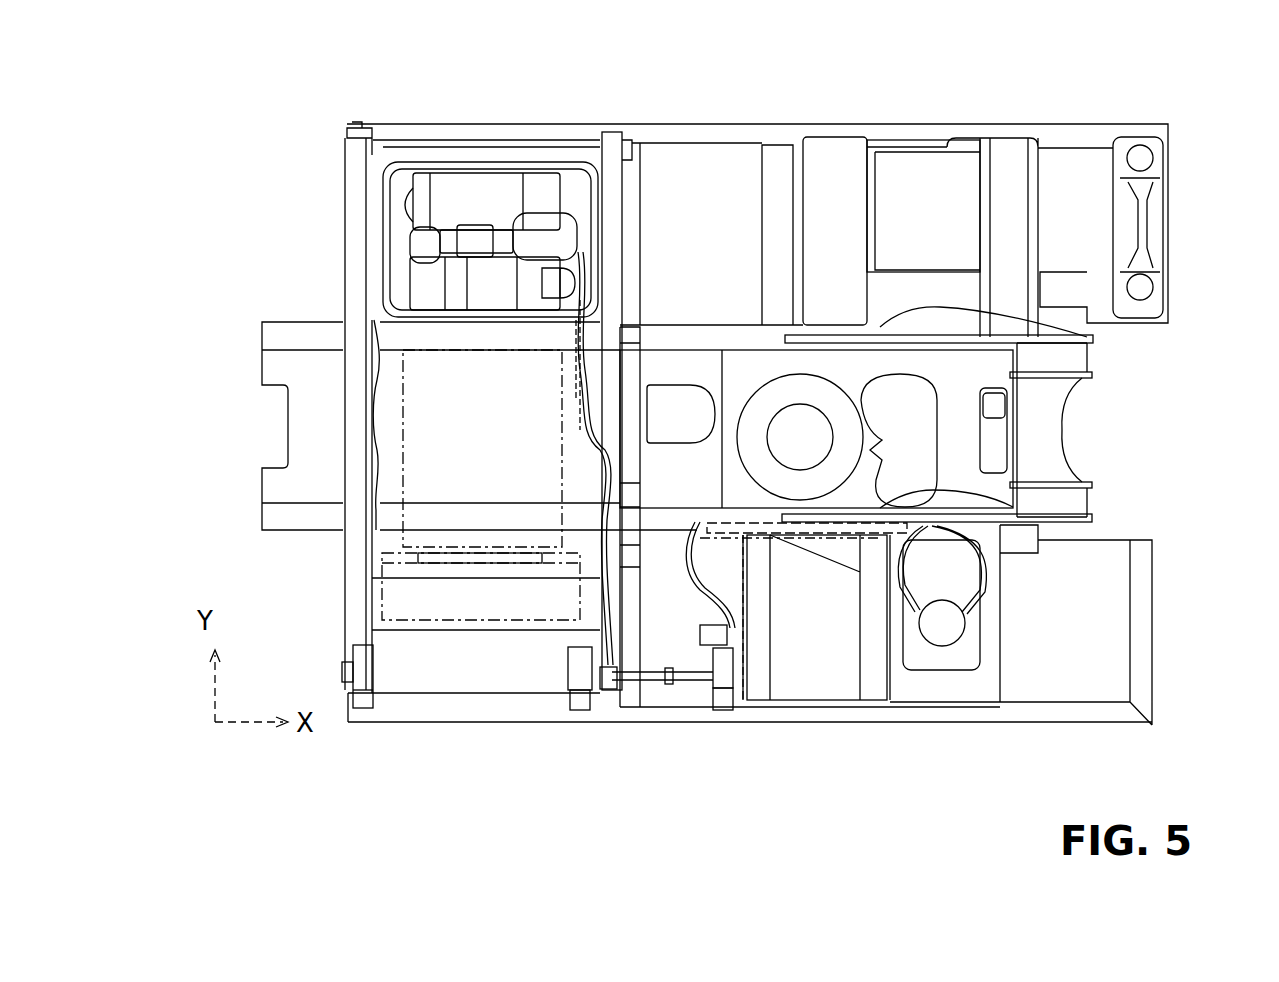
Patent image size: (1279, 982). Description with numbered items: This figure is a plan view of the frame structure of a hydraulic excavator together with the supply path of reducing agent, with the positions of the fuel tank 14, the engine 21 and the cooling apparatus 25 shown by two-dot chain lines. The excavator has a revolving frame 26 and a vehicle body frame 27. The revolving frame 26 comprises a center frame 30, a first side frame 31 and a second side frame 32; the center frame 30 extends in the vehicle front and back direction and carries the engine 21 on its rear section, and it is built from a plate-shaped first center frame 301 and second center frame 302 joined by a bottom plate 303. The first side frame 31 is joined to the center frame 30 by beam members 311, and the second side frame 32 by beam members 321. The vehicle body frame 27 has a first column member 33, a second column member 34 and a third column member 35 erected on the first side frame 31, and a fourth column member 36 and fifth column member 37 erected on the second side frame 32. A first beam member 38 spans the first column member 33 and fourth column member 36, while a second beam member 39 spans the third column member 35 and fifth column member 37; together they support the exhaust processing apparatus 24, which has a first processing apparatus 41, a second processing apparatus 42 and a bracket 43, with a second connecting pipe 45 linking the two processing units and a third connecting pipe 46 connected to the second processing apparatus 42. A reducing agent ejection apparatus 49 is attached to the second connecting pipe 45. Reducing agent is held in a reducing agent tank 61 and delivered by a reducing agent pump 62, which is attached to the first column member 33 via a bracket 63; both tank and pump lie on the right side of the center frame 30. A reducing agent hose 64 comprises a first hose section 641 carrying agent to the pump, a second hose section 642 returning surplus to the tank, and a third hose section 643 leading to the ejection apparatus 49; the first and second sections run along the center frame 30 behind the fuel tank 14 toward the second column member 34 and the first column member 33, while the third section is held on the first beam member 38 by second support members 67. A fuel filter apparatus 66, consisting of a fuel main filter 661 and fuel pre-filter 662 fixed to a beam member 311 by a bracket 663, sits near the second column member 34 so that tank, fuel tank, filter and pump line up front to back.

The fuel tank 14 is at (848, 722).
The engine 21 is at (400, 465).
The exhaust processing apparatus 24 is at (433, 160).
The cooling apparatus 25 is at (385, 600).
The revolving frame 26 is at (1118, 453).
The vehicle body frame 27 is at (321, 563).
The center frame 30 is at (1050, 423).
The first side frame 31 is at (912, 710).
The second side frame 32 is at (917, 135).
The first column member 33 is at (570, 705).
The second column member 34 is at (730, 705).
The third column member 35 is at (366, 706).
The fourth column member 36 is at (612, 136).
The fifth column member 37 is at (365, 130).
The first beam member 38 is at (605, 452).
The second beam member 39 is at (358, 393).
The first processing apparatus 41 is at (428, 283).
The second processing apparatus 42 is at (503, 187).
The bracket 43 is at (395, 240).
The second connecting pipe 45 is at (480, 225).
The third connecting pipe 46 is at (558, 247).
The reducing agent ejection apparatus 49 is at (585, 255).
The reducing agent tank 61 is at (955, 655).
The reducing agent pump 62 is at (595, 700).
The bracket 63 is at (608, 690).
The reducing agent hose 64 is at (670, 700).
The fuel filter apparatus 66 is at (698, 665).
The second support members 67 is at (580, 360).
The first center frame 301 is at (1090, 518).
The second center frame 302 is at (1090, 337).
The bottom plate 303 is at (842, 365).
The beam members 311 is at (770, 640).
The beam members 321 is at (1007, 155).
The first hose section 641 is at (920, 562).
The second hose section 642 is at (965, 603).
The third hose section 643 is at (573, 405).
The fuel main filter 661 is at (710, 623).
The fuel pre-filter 662 is at (713, 683).
The bracket 663 is at (700, 639).